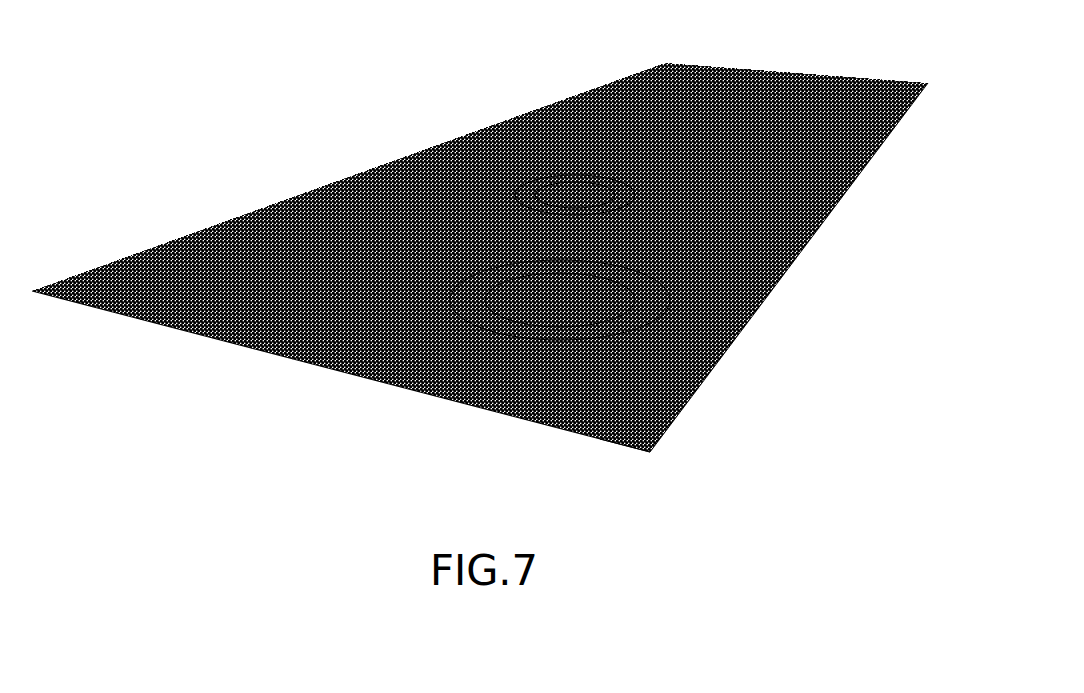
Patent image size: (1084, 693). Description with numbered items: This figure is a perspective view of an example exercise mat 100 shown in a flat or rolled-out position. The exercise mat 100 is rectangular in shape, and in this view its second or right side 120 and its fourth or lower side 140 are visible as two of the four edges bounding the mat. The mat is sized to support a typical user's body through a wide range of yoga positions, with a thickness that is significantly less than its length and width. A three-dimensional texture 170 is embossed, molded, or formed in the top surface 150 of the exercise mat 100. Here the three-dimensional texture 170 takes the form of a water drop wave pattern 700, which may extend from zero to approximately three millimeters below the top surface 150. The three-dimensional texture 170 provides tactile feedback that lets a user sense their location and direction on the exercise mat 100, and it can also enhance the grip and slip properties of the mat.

The exercise mat 100 is at (800, 110).
The second or right side 120 is at (660, 442).
The fourth or lower side 140 is at (322, 365).
The top surface 150 is at (785, 238).
The three-dimensional texture 170 is at (520, 152).
The water drop wave pattern 700 is at (392, 200).